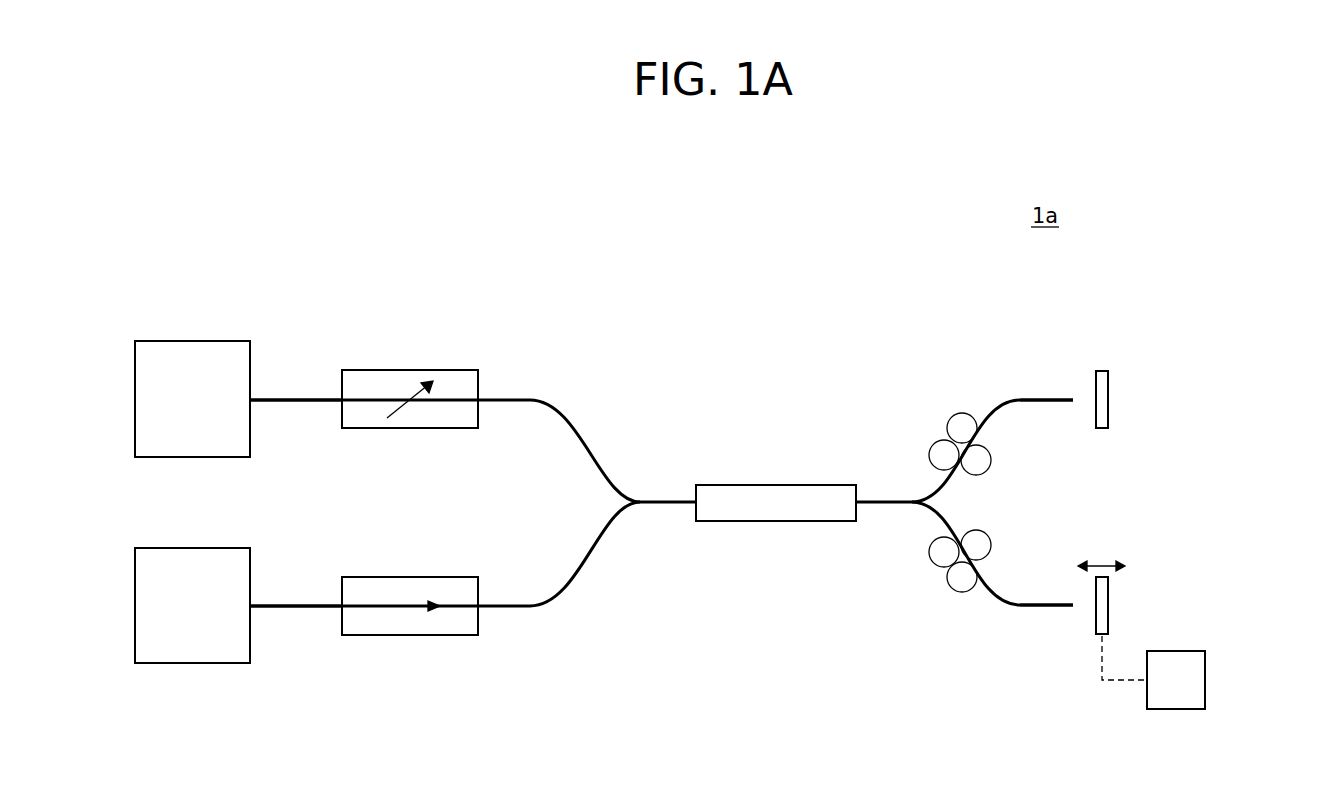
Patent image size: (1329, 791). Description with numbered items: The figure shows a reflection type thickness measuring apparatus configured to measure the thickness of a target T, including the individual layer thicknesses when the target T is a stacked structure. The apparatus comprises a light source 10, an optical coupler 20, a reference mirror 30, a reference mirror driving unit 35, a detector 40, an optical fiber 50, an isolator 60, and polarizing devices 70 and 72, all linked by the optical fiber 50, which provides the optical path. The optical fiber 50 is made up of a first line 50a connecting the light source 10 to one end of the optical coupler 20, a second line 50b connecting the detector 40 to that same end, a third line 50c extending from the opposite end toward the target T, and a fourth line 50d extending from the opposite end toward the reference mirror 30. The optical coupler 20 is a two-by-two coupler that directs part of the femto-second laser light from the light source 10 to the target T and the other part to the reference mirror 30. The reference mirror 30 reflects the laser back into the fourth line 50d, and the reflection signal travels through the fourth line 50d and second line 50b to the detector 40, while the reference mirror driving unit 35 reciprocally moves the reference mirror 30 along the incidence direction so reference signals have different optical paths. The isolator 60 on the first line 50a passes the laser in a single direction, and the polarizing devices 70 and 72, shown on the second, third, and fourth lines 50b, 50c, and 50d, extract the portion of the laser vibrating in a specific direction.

The light source 10 is at (210, 547).
The optical coupler 20 is at (802, 484).
The reference mirror 30 is at (1109, 600).
The reference mirror driving unit 35 is at (1205, 677).
The detector 40 is at (210, 340).
The optical fiber 50 is at (293, 628).
The first line 50a is at (297, 604).
The second line 50b is at (297, 398).
The third line 50c is at (1050, 398).
The fourth line 50d is at (1050, 603).
The isolator 60 is at (437, 576).
The polarizing device 70 is at (437, 369).
The polarizing device 72 is at (960, 412).
The target T is at (1103, 370).